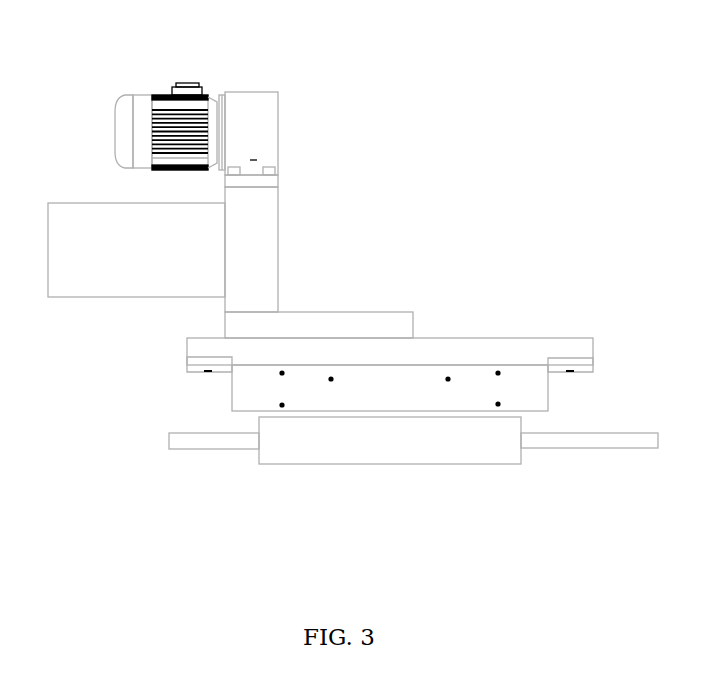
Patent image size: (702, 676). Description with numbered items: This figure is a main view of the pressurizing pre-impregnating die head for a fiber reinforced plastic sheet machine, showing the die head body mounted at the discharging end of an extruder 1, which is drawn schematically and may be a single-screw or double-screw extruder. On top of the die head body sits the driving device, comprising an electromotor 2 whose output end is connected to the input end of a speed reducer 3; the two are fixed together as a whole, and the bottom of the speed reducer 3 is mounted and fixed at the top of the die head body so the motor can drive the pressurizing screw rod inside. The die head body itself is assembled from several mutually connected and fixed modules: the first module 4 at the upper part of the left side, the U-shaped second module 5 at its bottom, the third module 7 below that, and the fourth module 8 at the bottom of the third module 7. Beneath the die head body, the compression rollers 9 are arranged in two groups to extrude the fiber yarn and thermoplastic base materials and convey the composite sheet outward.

The extruder 1 is at (117, 263).
The electromotor 2 is at (165, 126).
The speed reducer 3 is at (253, 142).
The first module 4 is at (257, 252).
The second module 5 is at (297, 324).
The third module 7 is at (424, 349).
The fourth module 8 is at (528, 387).
The compression roller 9 is at (382, 452).